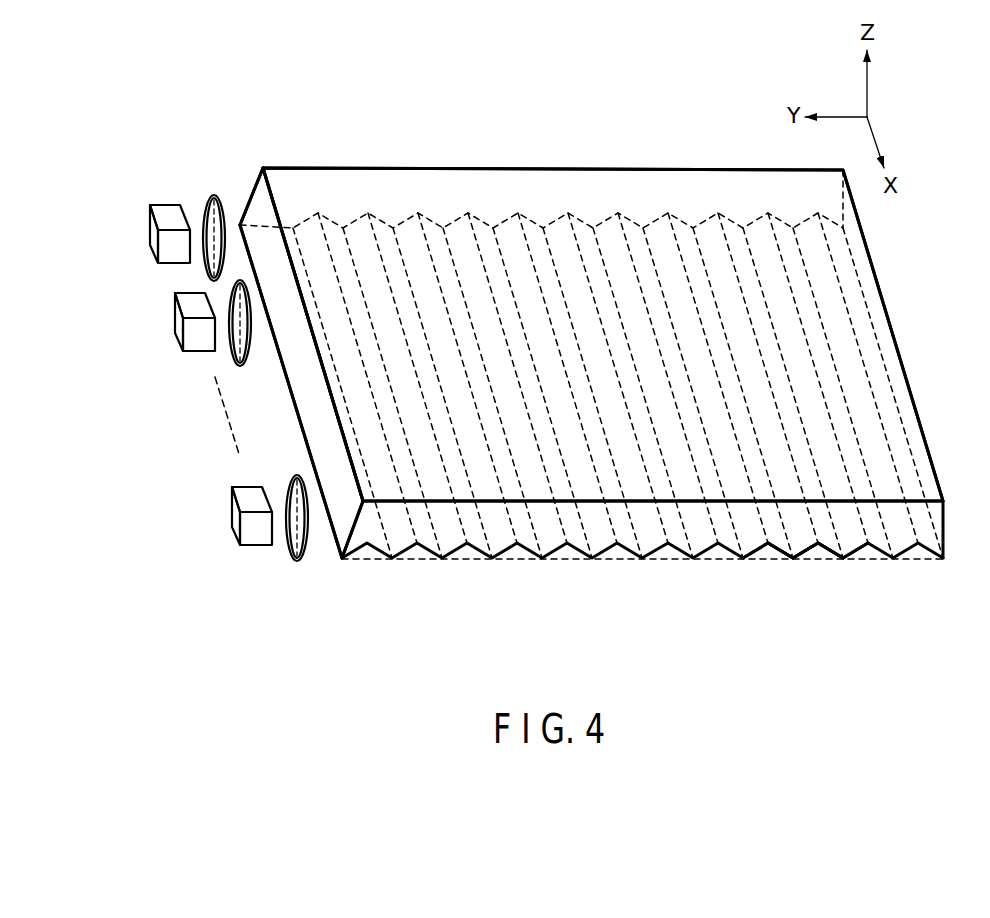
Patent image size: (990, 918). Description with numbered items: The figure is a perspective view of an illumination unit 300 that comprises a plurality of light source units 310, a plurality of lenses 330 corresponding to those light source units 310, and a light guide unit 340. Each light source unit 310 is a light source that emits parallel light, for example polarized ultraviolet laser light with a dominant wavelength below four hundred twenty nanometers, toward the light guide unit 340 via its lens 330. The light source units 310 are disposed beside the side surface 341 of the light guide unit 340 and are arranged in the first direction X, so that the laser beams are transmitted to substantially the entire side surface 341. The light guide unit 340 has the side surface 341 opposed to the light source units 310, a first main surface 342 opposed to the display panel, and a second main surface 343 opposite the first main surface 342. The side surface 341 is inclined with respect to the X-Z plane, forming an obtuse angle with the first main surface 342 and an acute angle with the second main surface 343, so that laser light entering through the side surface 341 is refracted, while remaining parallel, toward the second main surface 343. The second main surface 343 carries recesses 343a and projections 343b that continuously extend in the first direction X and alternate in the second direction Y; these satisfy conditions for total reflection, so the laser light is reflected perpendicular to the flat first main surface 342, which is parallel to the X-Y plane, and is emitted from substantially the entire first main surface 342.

The illumination unit 300 is at (247, 126).
The light source unit 310 is at (240, 536).
The lens 330 is at (297, 562).
The light guide unit 340 is at (575, 168).
The side surface 341 is at (346, 513).
The first main surface 342 is at (427, 494).
The second main surface 343 is at (488, 564).
The recess 343a is at (766, 552).
The projection 343b is at (792, 566).